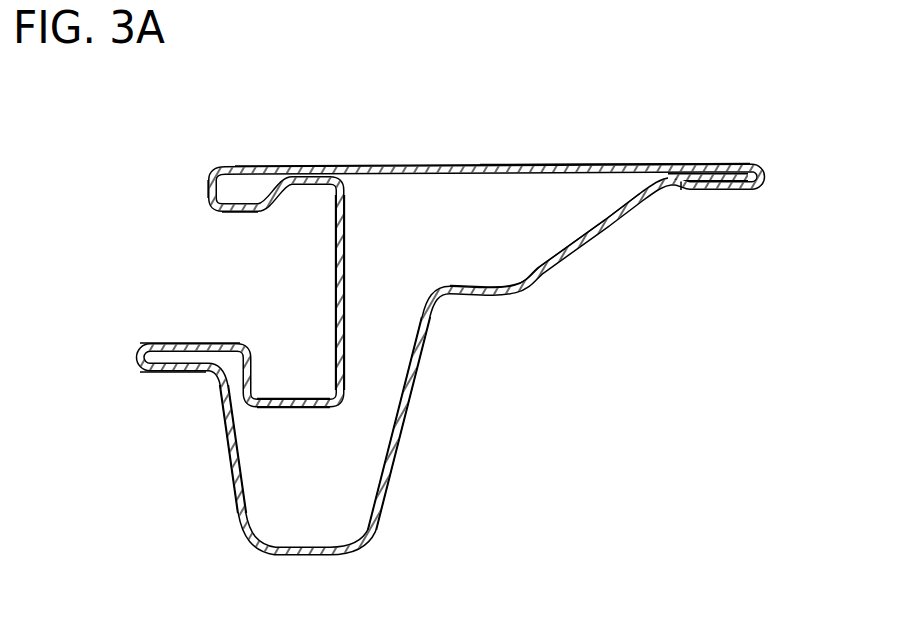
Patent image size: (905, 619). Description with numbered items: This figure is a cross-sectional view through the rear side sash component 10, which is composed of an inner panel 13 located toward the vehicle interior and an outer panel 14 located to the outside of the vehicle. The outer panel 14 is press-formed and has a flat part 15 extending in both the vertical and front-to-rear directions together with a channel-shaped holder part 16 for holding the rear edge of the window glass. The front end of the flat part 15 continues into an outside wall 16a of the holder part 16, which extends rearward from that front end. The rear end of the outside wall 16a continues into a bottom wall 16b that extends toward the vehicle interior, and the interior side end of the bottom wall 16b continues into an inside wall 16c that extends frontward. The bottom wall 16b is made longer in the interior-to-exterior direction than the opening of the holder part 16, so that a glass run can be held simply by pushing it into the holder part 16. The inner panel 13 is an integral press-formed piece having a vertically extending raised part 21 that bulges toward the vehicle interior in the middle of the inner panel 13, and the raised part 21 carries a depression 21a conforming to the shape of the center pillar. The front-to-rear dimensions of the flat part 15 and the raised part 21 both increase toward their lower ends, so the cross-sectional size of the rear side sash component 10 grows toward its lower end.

The rear side sash component 10 is at (172, 122).
The inner panel 13 is at (230, 467).
The outer panel 14 is at (475, 165).
The flat part 15 is at (540, 163).
The holder part 16 is at (233, 352).
The outside wall 16a is at (248, 213).
The bottom wall 16b is at (333, 279).
The inside wall 16c is at (302, 397).
The raised part 21 is at (382, 523).
The depression 21a is at (438, 300).